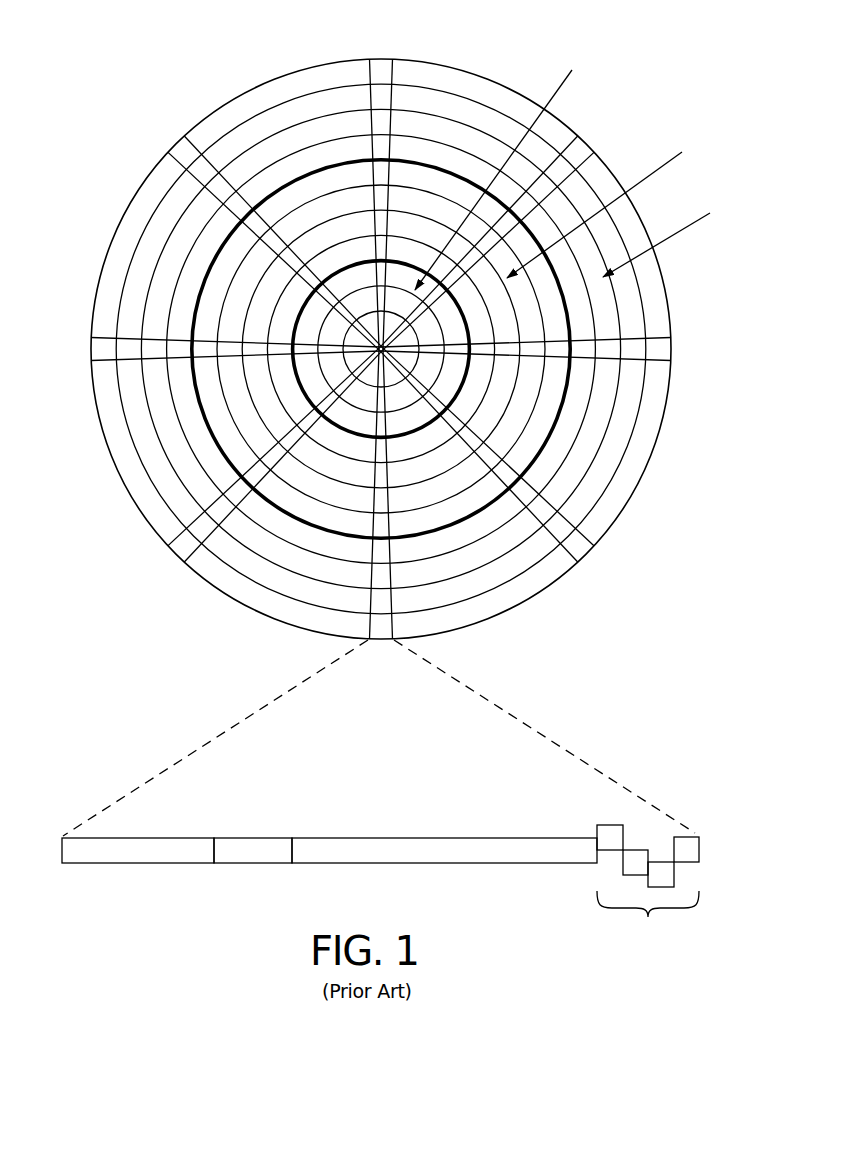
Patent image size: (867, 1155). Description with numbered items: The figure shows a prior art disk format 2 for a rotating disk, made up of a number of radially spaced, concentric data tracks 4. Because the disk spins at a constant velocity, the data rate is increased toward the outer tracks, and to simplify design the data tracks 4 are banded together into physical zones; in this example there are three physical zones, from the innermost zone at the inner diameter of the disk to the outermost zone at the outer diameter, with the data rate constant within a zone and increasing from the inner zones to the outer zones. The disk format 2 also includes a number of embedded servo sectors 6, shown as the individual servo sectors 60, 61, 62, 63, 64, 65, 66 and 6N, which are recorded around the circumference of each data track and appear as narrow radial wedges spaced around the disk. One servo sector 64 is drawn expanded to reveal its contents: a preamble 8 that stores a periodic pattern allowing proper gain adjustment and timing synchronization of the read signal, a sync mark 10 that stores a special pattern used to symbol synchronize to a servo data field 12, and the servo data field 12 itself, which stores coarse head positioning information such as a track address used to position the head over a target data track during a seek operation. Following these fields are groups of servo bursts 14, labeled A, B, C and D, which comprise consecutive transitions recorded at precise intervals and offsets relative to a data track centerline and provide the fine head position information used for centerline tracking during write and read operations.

The disk format 2 is at (167, 68).
The data tracks 4 is at (480, 122).
The embedded servo sectors 6 is at (381, 359).
The embedded servo sector 60 is at (382, 70).
The embedded servo sector 61 is at (580, 153).
The embedded servo sector 62 is at (667, 350).
The embedded servo sector 63 is at (578, 552).
The embedded servo sector 64 is at (253, 707).
The embedded servo sector 65 is at (178, 550).
The embedded servo sector 66 is at (92, 350).
The embedded servo sector 6N is at (180, 152).
The preamble 8 is at (118, 865).
The sync mark 10 is at (250, 865).
The servo data field 12 is at (432, 865).
The servo bursts 14 is at (588, 810).